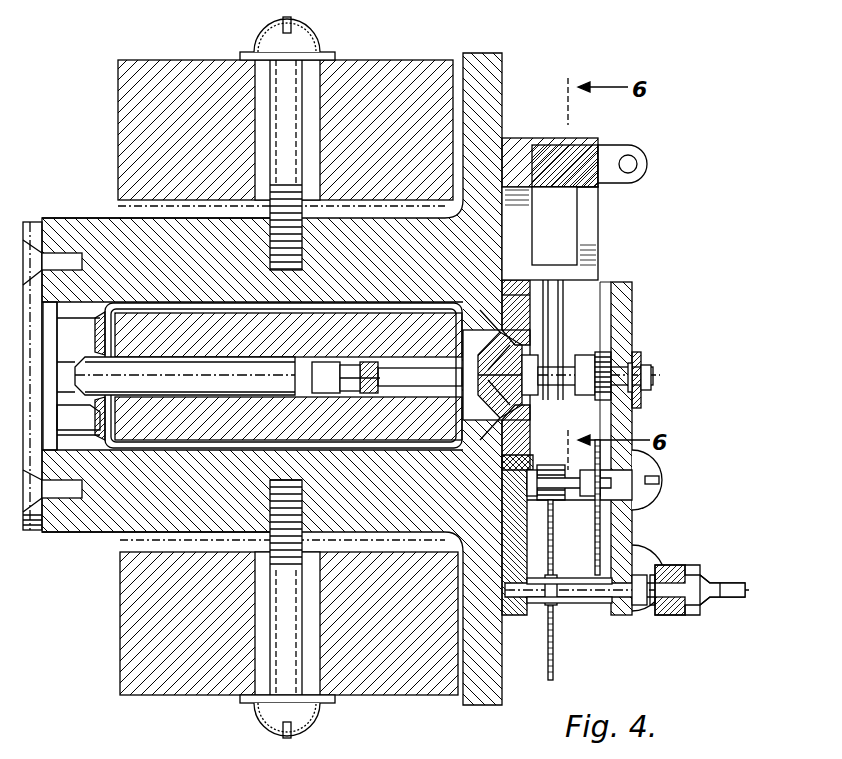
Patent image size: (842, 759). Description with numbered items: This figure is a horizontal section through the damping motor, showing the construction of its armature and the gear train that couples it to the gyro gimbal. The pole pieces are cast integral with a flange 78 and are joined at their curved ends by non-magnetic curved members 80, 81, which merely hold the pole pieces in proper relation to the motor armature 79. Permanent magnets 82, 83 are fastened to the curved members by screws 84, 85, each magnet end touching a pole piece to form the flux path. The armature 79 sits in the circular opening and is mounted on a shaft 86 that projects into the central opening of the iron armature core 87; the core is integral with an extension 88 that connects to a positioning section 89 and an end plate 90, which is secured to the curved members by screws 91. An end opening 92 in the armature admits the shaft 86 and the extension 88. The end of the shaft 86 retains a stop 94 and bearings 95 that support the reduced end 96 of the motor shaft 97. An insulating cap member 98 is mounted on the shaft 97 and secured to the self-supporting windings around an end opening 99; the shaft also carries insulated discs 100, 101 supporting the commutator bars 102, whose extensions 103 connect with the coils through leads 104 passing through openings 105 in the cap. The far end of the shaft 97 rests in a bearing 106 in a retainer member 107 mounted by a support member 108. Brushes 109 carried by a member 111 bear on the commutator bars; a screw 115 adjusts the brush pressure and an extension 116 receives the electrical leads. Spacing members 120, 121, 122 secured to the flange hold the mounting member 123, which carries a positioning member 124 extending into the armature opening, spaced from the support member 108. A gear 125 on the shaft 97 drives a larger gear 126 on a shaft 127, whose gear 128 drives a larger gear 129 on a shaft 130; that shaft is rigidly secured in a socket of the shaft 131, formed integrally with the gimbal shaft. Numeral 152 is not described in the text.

The flange 78 is at (488, 72).
The motor armature 79 is at (188, 305).
The curved member 80 is at (222, 507).
The curved member 81 is at (220, 242).
The permanent magnet 82 is at (418, 685).
The permanent magnet 83 is at (404, 70).
The screw 84 is at (266, 728).
The screw 85 is at (310, 40).
The shaft 86 is at (185, 376).
The armature core 87 is at (288, 376).
The extension 88 is at (96, 358).
The positioning section 89 is at (52, 331).
The end plate 90 is at (40, 528).
The screw 91 is at (64, 258).
The end opening 92 is at (96, 408).
The stop 94 is at (352, 365).
The bearings 95 is at (330, 362).
The reduced end 96 is at (372, 393).
The motor shaft 97 is at (405, 368).
The cap member 98 is at (470, 325).
The end opening 99 is at (470, 345).
The insulated disc 100 is at (538, 358).
The insulated disc 101 is at (583, 362).
The commutator bars 102 is at (553, 392).
The extensions 103 is at (520, 345).
The leads 104 is at (522, 292).
The openings 105 is at (505, 318).
The bearing 106 is at (651, 379).
The retainer member 107 is at (642, 359).
The support member 108 is at (630, 319).
The brushes 109 is at (562, 296).
The brush member 111 is at (570, 232).
The screw 115 is at (590, 210).
The extension 116 is at (616, 146).
The spacing member 120 is at (569, 590).
The spacing member 121 is at (570, 597).
The spacing member 122 is at (622, 522).
The mounting member 123 is at (513, 612).
The positioning member 124 is at (515, 455).
The gear 125 is at (606, 358).
The gear 126 is at (600, 419).
The shaft 127 is at (570, 482).
The gear 128 is at (560, 505).
The gear 129 is at (556, 665).
The shaft 130 is at (640, 590).
The shaft 131 is at (735, 572).
The nut 152 is at (683, 610).